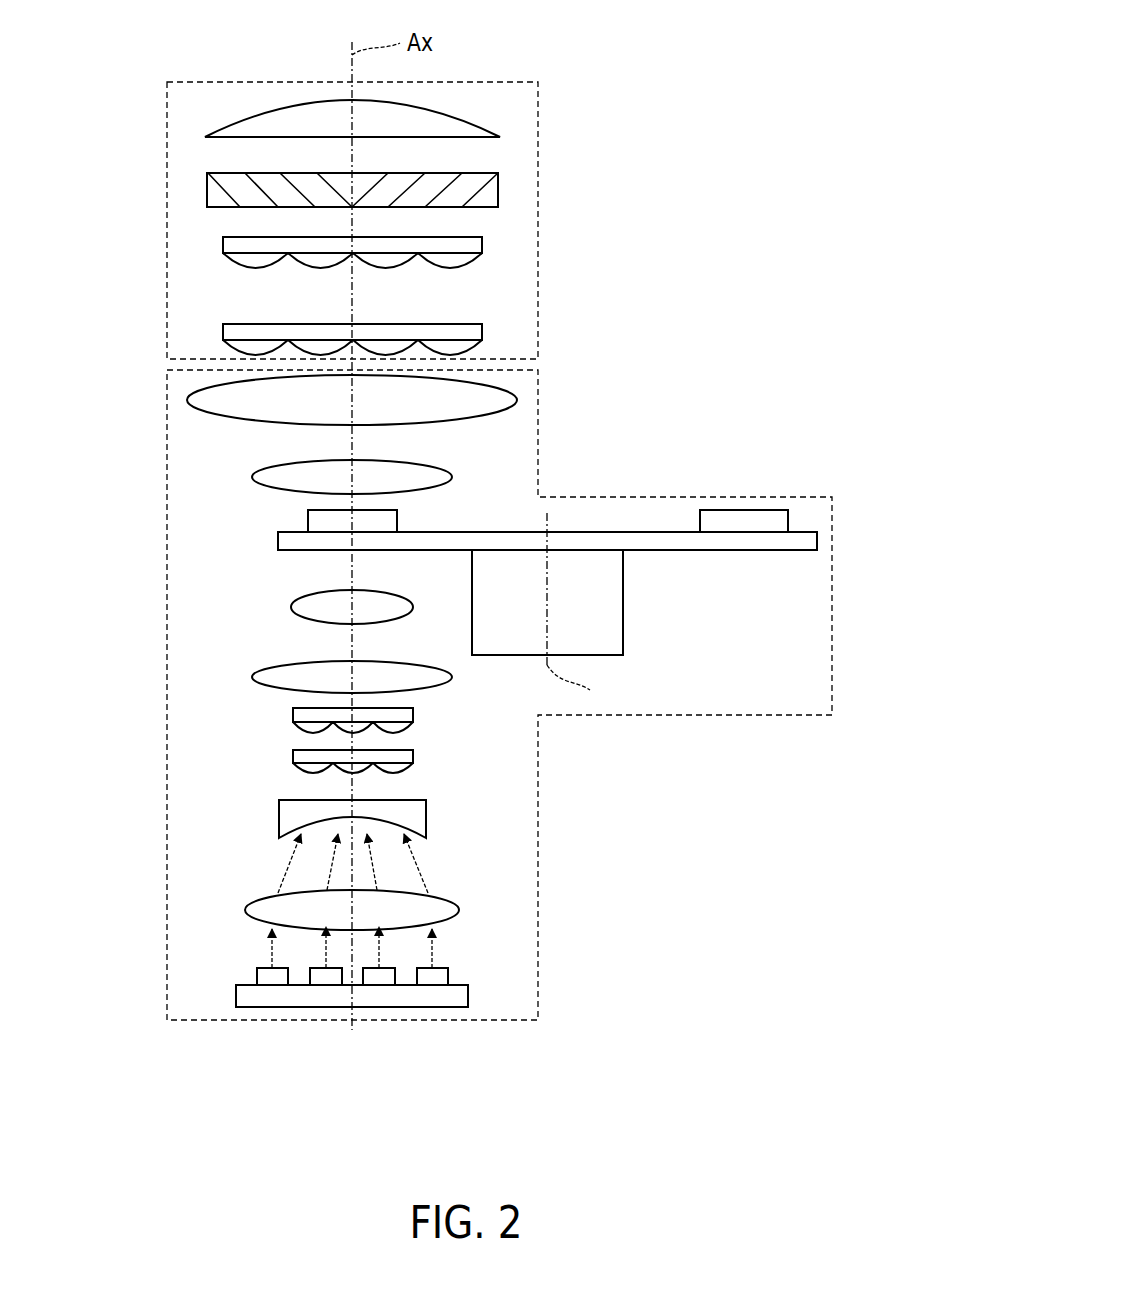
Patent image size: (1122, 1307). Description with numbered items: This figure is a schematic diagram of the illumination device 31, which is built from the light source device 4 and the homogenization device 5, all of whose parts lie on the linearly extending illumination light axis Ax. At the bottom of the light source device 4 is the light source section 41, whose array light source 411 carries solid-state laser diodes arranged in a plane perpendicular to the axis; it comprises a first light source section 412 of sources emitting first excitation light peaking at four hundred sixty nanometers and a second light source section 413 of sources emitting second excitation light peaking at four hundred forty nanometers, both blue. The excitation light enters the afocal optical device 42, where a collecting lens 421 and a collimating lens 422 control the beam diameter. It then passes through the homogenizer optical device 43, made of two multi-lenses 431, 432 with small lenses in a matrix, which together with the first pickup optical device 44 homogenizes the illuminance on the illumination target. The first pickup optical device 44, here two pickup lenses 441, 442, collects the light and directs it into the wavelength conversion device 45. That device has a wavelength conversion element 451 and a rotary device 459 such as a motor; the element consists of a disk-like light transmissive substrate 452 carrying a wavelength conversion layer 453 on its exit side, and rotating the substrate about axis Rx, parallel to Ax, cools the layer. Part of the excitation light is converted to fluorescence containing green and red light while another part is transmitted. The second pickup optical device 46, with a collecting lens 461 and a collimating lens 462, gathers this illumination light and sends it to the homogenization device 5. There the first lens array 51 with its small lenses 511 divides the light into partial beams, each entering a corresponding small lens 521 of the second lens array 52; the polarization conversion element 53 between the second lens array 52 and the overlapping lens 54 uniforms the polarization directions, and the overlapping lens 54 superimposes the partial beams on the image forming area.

The illumination device 31 is at (725, 78).
The homogenization device 5 is at (540, 100).
The overlapping lens 54 is at (500, 128).
The polarization conversion element 53 is at (498, 190).
The second lens array 52 is at (345, 254).
The small lens 521 is at (235, 263).
The first lens array 51 is at (345, 341).
The small lens 511 is at (235, 348).
The light source device 4 is at (622, 497).
The second pickup optical device 46 is at (89, 487).
The collimating lens 462 is at (187, 400).
The collecting lens 461 is at (253, 477).
The wavelength conversion device 45 is at (808, 668).
The wavelength conversion element 451 is at (817, 540).
The substrate 452 is at (775, 545).
The wavelength conversion layer 453 is at (397, 522).
The rotary device 459 is at (623, 630).
The first pickup optical device 44 is at (89, 587).
The pickup lens 442 is at (292, 607).
The pickup lens 441 is at (253, 677).
The homogenizer optical device 43 is at (89, 712).
The multi-lens 432 is at (293, 712).
The multi-lens 431 is at (293, 760).
The afocal optical device 42 is at (89, 920).
The collimating lens 422 is at (279, 820).
The collecting lens 421 is at (245, 910).
The light source section 41 is at (514, 958).
The array light source 411 is at (468, 995).
The second light source section 413 is at (265, 988).
The first light source section 412 is at (322, 988).